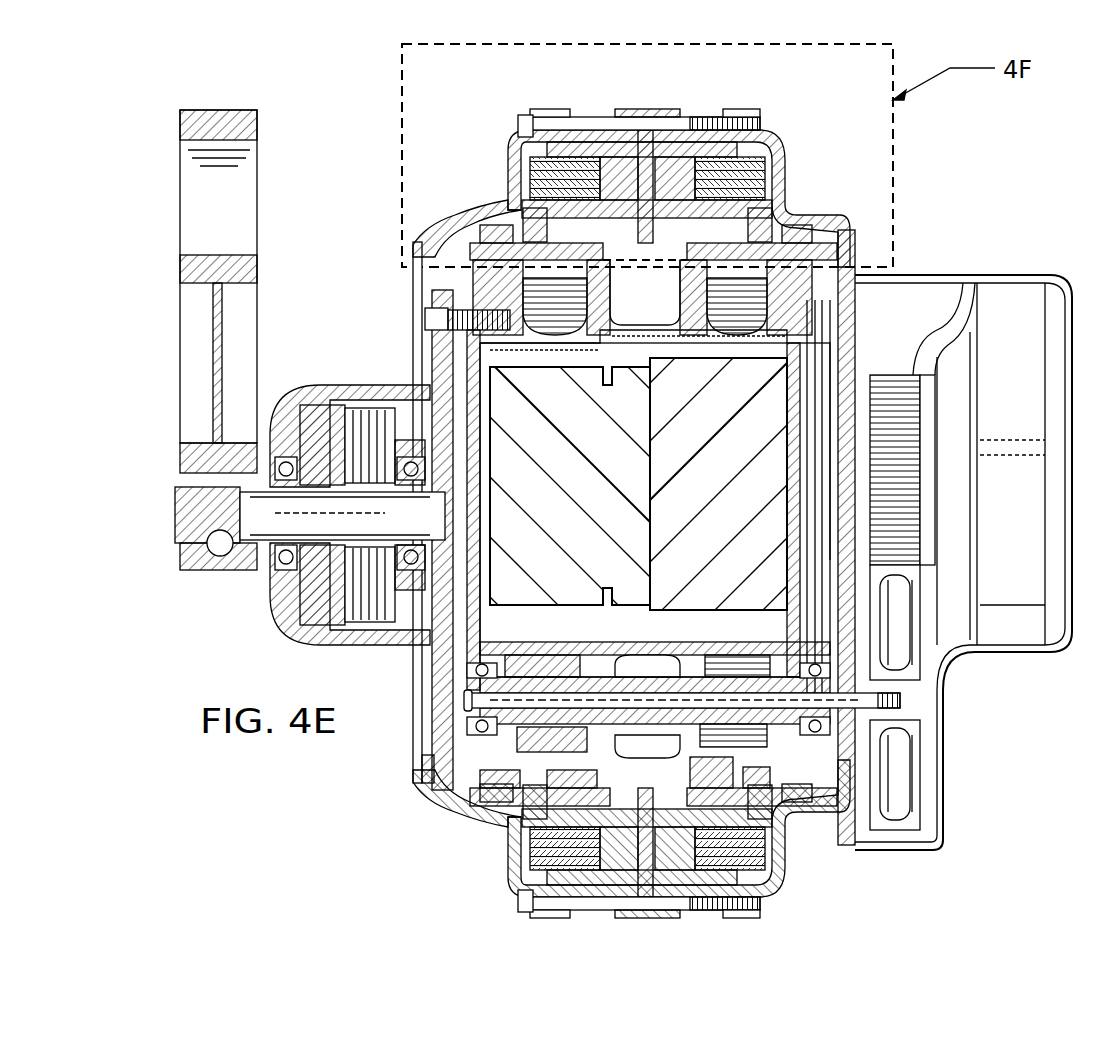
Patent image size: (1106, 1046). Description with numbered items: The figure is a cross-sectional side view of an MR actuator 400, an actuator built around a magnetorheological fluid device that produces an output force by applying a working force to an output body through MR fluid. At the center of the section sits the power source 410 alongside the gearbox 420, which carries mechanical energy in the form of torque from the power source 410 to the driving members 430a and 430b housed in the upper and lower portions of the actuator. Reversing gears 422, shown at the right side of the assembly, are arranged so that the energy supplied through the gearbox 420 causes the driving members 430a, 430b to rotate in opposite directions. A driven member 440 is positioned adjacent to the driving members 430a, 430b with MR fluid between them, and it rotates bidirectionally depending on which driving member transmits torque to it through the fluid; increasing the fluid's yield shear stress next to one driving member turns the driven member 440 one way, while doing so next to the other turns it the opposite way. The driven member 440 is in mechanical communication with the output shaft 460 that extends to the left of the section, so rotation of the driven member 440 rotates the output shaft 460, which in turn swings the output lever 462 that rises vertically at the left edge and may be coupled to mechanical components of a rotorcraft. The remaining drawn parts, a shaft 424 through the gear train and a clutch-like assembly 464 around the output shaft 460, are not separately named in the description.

The MR actuator 400 is at (1000, 160).
The power source 410 is at (592, 499).
The gearbox 420 is at (743, 499).
The reversing gears 422 is at (900, 375).
The shaft 424 is at (648, 709).
The driving member 430a is at (533, 203).
The driving member 430b is at (762, 205).
The driven member 440 is at (588, 140).
The output shaft 460 is at (175, 518).
The output lever 462 is at (220, 110).
The clutch 464 is at (360, 385).